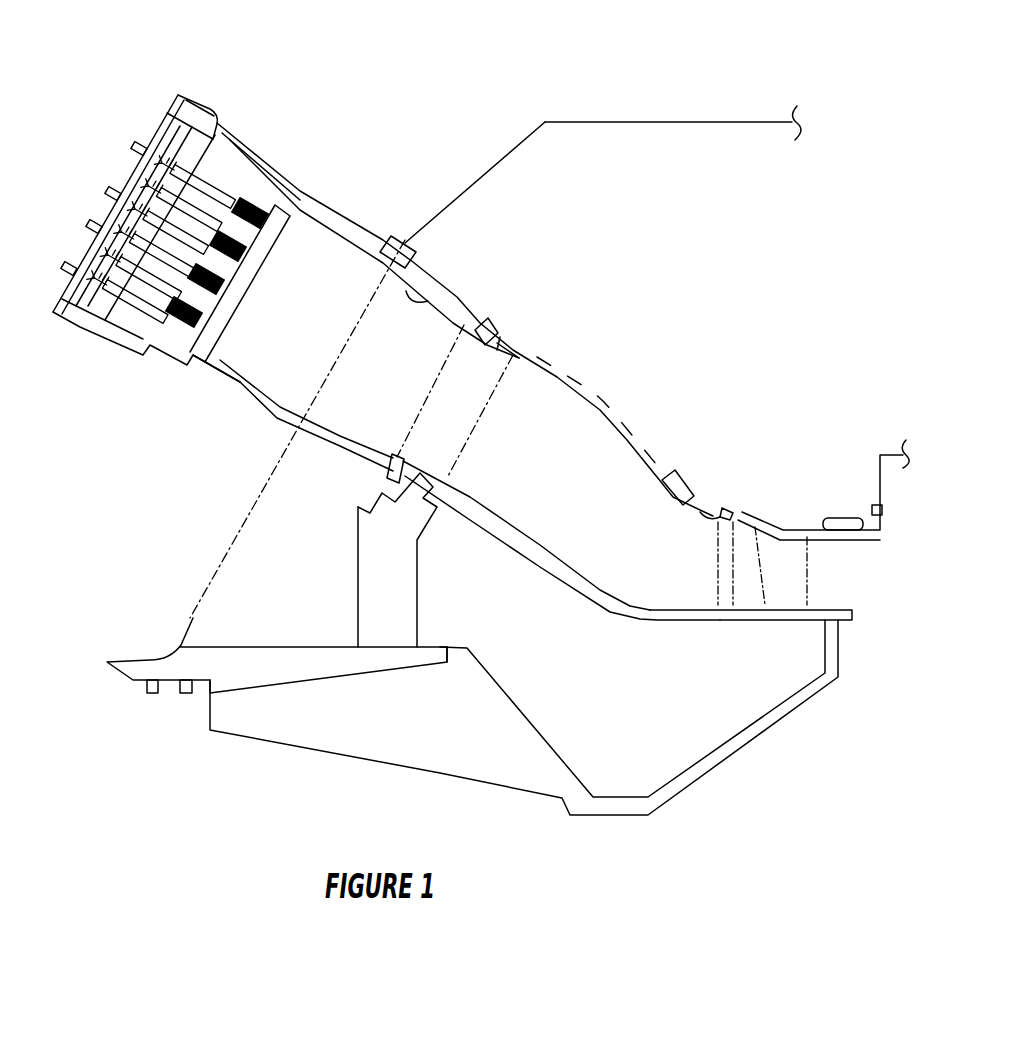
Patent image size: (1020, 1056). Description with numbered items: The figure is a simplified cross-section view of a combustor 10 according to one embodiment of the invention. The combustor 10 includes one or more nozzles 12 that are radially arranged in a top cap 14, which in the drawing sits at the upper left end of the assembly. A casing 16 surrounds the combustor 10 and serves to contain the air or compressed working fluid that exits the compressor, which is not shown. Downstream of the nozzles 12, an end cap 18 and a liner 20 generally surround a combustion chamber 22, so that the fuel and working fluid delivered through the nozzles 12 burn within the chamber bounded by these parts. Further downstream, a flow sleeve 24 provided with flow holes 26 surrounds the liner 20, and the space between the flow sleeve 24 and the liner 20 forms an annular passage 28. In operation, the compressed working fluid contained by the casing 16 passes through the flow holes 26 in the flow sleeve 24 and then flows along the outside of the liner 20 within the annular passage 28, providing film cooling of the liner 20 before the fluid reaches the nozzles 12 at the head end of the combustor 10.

The combustor 10 is at (352, 92).
The nozzles 12 is at (197, 200).
The top cap 14 is at (247, 332).
The casing 16 is at (546, 120).
The end cap 18 is at (86, 268).
The liner 20 is at (432, 300).
The combustion chamber 22 is at (293, 330).
The flow sleeve 24 is at (565, 373).
The flow holes 26 is at (527, 355).
The annular passage 28 is at (640, 453).